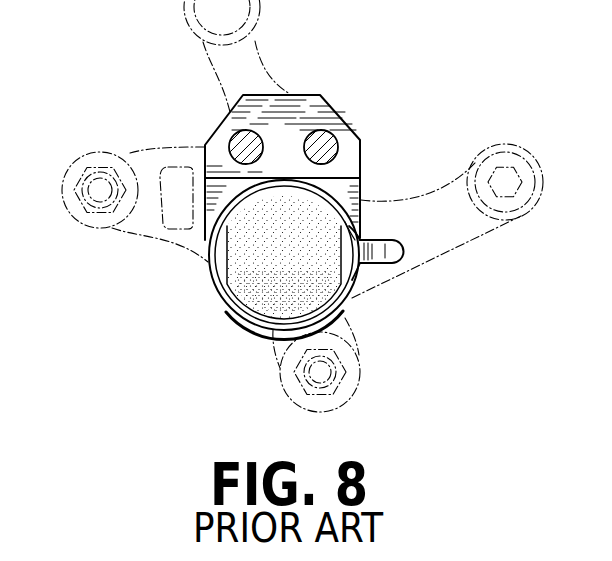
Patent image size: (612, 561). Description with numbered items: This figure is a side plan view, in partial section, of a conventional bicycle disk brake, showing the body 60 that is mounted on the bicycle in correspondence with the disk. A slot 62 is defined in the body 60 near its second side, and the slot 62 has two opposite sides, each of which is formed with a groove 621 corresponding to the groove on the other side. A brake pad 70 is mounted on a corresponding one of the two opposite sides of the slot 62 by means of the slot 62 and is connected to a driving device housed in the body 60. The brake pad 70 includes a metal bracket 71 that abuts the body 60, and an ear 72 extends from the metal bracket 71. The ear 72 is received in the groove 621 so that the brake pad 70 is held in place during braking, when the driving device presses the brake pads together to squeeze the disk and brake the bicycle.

The body 60 is at (182, 139).
The slot 62 is at (213, 190).
The groove 621 is at (358, 238).
The brake pad 70 is at (266, 299).
The metal bracket 71 is at (222, 256).
The ear 72 is at (399, 263).